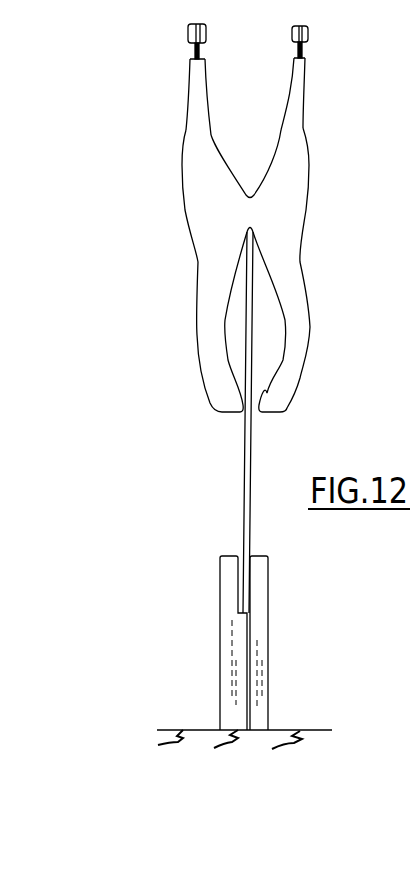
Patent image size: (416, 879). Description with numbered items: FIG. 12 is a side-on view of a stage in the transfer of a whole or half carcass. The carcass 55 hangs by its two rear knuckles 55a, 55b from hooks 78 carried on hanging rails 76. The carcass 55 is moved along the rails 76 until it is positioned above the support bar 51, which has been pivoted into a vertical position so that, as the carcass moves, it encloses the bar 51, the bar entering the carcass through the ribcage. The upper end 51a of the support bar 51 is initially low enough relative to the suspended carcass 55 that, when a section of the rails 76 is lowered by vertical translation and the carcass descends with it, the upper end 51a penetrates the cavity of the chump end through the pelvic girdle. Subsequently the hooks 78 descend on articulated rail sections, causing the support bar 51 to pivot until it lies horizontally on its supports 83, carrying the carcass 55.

The hanging rails 76 is at (195, 49).
The hooks 78 is at (297, 49).
The rear knuckle 55a is at (198, 80).
The rear knuckle 55b is at (297, 80).
The carcass 55 is at (184, 210).
The upper end of the support bar 51a is at (254, 230).
The support bar 51 is at (246, 305).
The supports 83 is at (230, 637).